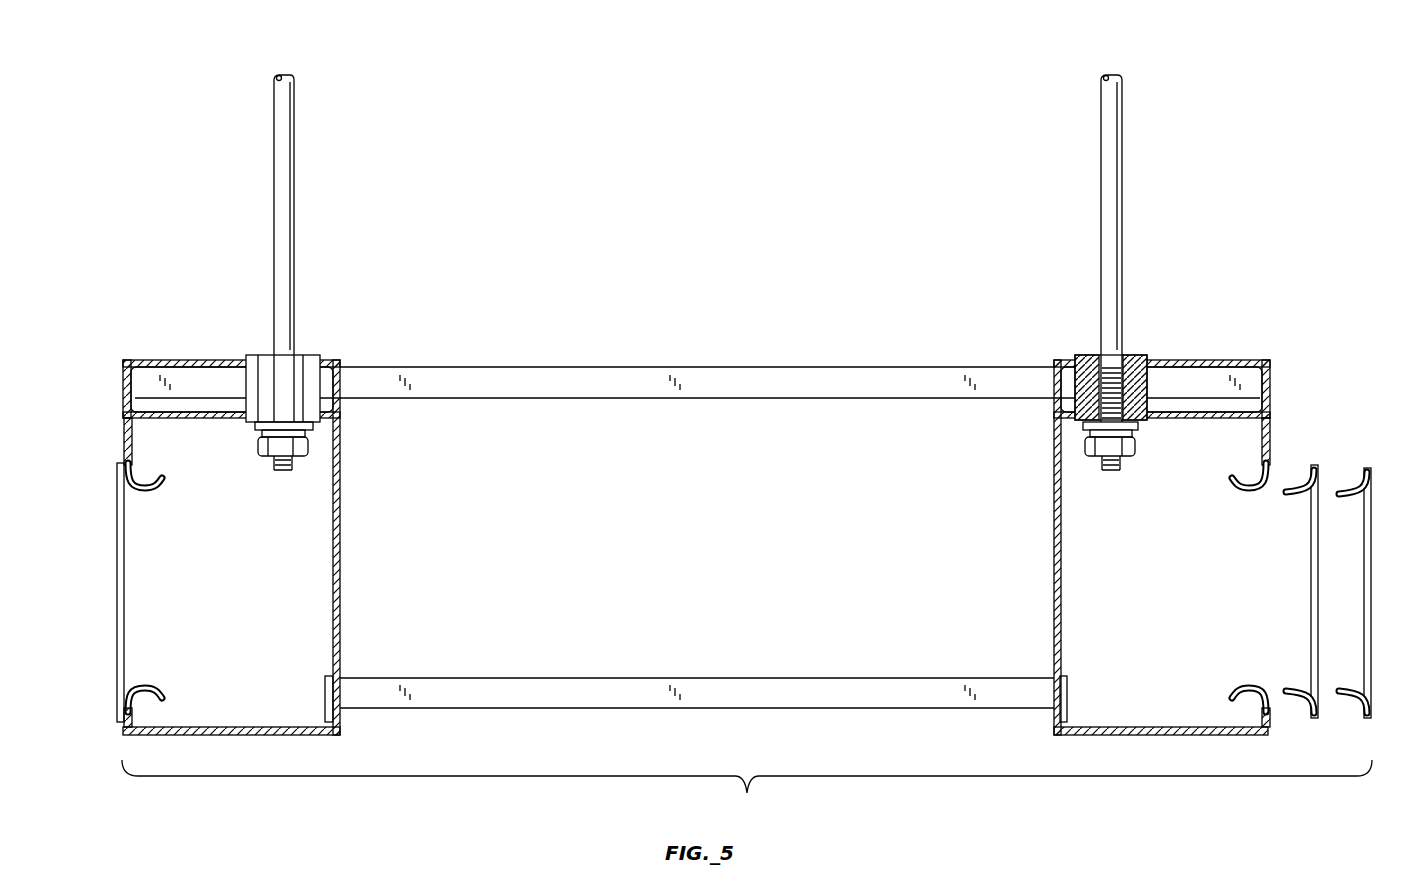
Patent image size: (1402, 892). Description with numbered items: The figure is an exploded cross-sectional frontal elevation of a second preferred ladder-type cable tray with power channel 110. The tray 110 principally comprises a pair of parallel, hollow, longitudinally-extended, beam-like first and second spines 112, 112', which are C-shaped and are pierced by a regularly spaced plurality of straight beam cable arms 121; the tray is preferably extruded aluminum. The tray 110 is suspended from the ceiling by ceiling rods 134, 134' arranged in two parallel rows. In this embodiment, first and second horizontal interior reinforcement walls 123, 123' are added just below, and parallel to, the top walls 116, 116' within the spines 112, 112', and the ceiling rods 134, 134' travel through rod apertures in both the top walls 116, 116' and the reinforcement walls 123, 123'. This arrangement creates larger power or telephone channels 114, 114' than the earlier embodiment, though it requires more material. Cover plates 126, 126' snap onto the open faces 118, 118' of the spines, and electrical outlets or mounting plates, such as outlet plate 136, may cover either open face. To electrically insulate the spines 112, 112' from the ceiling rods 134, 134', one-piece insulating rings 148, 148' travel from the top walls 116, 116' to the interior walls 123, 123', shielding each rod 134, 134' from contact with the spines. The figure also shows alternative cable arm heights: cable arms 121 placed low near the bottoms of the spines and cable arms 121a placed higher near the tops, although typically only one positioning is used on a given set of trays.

The ladder-type cable tray with power channel 110 is at (879, 219).
The first spine 112 is at (1156, 536).
The second spine 112' is at (194, 525).
The power channel 114 is at (1024, 597).
The power channel 114' is at (106, 597).
The top wall 116 is at (1170, 404).
The top wall 116' is at (231, 398).
The open face 118 is at (1290, 722).
The open face 118' is at (105, 704).
The cable arm 121 is at (597, 678).
The cable arm 121a is at (597, 367).
The first horizontal interior reinforcement wall 123 is at (1162, 452).
The second horizontal interior reinforcement wall 123' is at (231, 446).
The cover plate 126 is at (1276, 591).
The cover plate 126' is at (160, 592).
The ceiling rod 134 is at (1154, 215).
The ceiling rod 134' is at (240, 215).
The outlet plate 136 is at (1372, 497).
The insulating ring 148 is at (1144, 388).
The insulating ring 148' is at (254, 378).